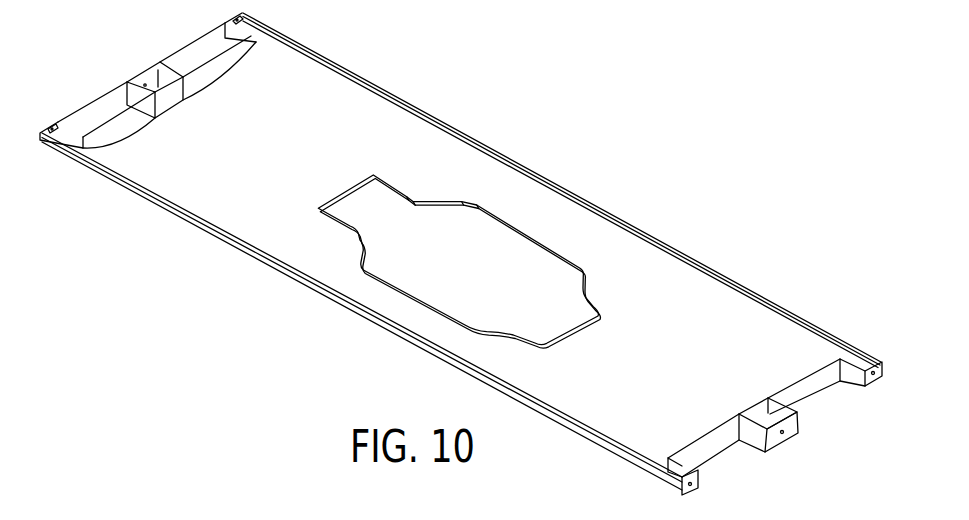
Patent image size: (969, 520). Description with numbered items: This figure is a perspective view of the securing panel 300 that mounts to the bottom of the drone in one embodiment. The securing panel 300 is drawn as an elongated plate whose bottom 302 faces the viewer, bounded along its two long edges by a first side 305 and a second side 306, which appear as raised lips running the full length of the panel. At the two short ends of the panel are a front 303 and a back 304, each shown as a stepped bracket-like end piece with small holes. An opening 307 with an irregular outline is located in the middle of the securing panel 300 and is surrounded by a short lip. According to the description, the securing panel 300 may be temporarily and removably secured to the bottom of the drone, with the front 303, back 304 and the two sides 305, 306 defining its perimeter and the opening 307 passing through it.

The securing panel 300 is at (693, 270).
The bottom 302 is at (566, 215).
The front 303 is at (818, 392).
The back 304 is at (218, 53).
The first side 305 is at (403, 101).
The second side 306 is at (270, 262).
The opening 307 is at (487, 228).